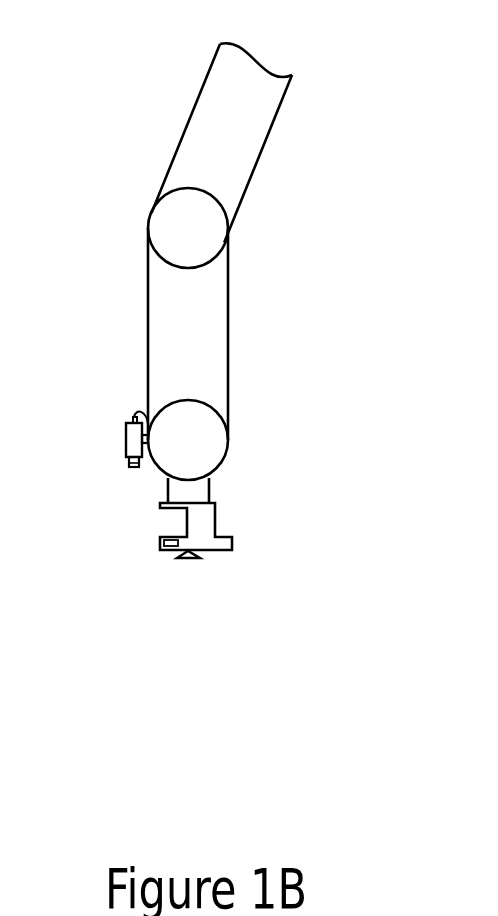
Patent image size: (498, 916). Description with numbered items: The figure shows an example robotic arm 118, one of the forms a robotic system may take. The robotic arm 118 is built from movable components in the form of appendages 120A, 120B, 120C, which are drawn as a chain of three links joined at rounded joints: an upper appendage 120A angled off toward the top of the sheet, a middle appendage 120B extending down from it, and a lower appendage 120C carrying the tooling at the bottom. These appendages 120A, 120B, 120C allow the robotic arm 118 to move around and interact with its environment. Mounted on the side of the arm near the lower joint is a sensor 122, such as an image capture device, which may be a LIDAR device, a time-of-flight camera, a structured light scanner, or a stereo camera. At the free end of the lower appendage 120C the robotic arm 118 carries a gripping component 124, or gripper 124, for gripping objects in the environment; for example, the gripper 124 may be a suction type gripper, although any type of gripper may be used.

The robotic arm 118 is at (318, 53).
The appendage 120A is at (178, 150).
The appendage 120B is at (147, 320).
The appendage 120C is at (210, 485).
The sensor 122 is at (128, 440).
The gripping component 124 is at (197, 557).